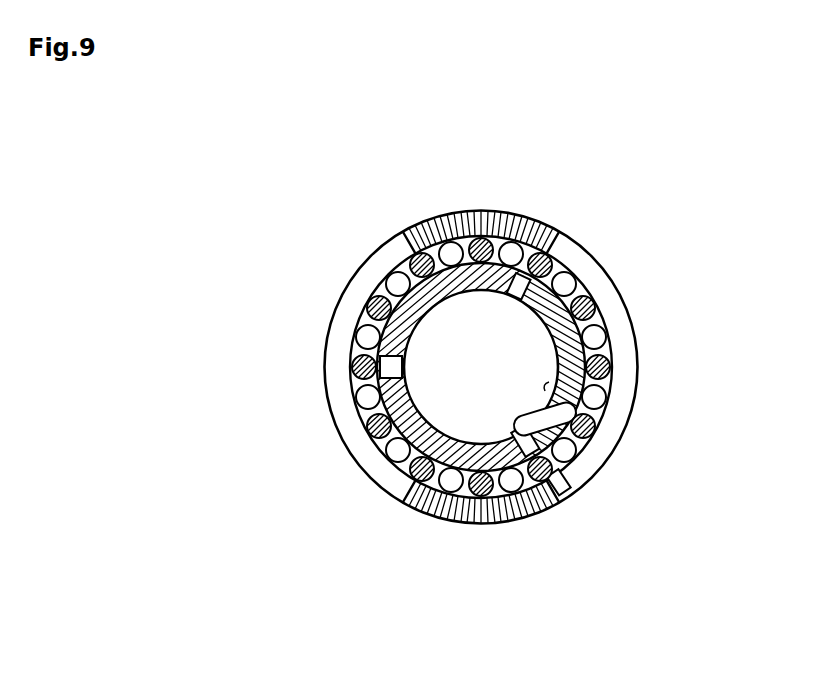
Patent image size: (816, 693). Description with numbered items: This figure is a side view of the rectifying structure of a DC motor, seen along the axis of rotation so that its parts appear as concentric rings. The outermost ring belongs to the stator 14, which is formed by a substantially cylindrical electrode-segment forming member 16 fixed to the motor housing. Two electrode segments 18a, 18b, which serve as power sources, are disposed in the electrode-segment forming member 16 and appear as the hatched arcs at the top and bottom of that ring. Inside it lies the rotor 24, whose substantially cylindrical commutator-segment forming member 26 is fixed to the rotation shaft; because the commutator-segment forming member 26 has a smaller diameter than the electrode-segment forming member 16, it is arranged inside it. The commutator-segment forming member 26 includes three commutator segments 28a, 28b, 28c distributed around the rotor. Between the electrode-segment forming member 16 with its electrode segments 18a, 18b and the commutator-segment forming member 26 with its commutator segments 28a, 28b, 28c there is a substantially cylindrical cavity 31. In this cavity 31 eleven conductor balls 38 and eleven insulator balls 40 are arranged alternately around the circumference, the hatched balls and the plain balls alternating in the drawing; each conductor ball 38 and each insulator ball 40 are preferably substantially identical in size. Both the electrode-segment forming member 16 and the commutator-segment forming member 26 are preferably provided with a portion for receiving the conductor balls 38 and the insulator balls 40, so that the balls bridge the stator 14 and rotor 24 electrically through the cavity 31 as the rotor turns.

The stator 14 is at (578, 241).
The electrode-segment forming member 16 is at (606, 291).
The electrode segment 18a is at (481, 210).
The electrode segment 18b is at (482, 524).
The rotor 24 is at (602, 388).
The commutator-segment forming member 26 is at (585, 435).
The commutator segment 28a is at (600, 345).
The commutator segment 28b is at (412, 302).
The commutator segment 28c is at (395, 462).
The cavity 31 is at (560, 478).
The conductor ball 38 is at (360, 375).
The insulator ball 40 is at (388, 362).